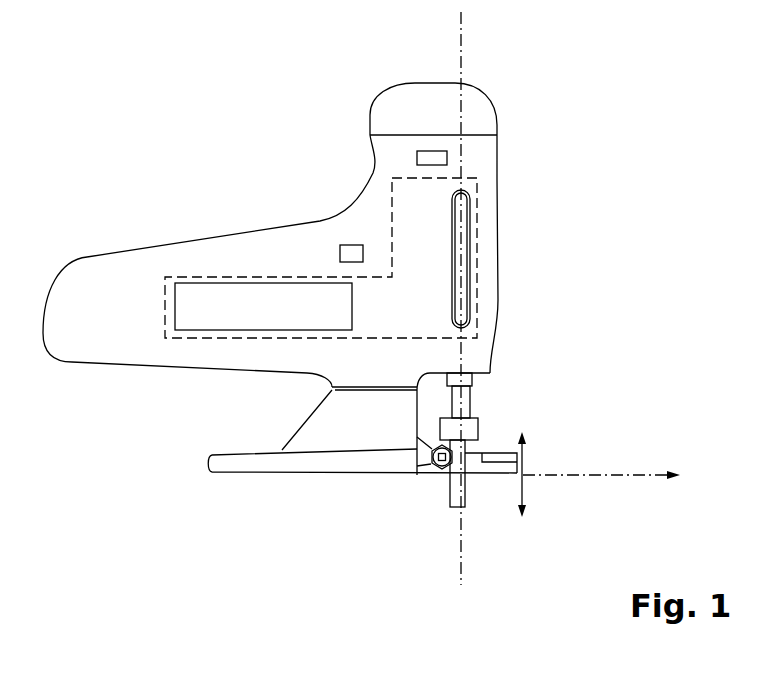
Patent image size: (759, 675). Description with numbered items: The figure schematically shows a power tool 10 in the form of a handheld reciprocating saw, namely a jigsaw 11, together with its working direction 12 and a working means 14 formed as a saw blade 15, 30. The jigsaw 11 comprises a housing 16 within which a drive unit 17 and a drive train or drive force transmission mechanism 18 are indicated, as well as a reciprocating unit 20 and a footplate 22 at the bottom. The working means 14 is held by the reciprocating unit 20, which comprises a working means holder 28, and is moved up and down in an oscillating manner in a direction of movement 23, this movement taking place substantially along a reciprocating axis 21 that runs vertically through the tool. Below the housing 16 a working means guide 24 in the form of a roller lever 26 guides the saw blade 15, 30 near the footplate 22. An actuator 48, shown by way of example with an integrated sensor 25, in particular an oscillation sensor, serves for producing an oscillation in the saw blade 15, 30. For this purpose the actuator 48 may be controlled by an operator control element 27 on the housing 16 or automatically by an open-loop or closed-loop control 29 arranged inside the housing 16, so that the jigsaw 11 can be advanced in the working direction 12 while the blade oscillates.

The power tool 10 is at (270, 247).
The jigsaw 11 is at (245, 75).
The working direction 12 is at (639, 471).
The working means 14 is at (512, 500).
The saw blade 15 is at (512, 500).
The cutting tool 30 is at (465, 478).
The housing 16 is at (374, 155).
The drive unit 17 is at (195, 283).
The drive force transmission mechanism 18 is at (258, 277).
The reciprocating unit 20 is at (470, 243).
The reciprocating axis 21 is at (466, 22).
The footplate 22 is at (275, 466).
The direction of movement 23 is at (525, 490).
The working means guide 24 is at (414, 487).
The roller lever 26 is at (430, 455).
The sensor 25 is at (507, 382).
The actuator 48 is at (474, 378).
The operator control element 27 is at (420, 151).
The working means holder 28 is at (471, 407).
The open-loop or closed-loop control 29 is at (350, 246).